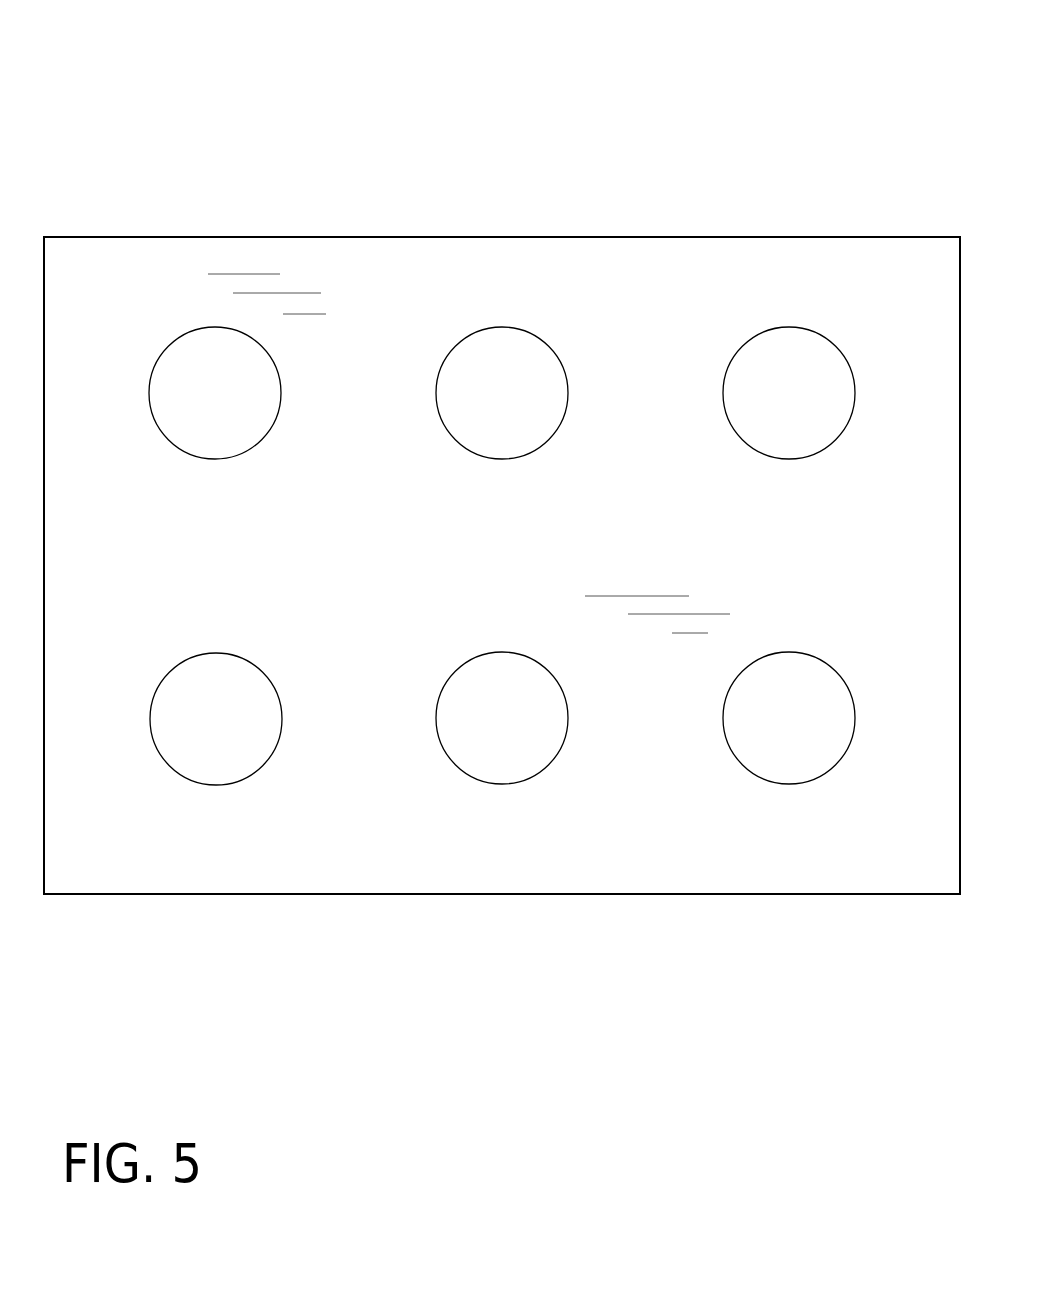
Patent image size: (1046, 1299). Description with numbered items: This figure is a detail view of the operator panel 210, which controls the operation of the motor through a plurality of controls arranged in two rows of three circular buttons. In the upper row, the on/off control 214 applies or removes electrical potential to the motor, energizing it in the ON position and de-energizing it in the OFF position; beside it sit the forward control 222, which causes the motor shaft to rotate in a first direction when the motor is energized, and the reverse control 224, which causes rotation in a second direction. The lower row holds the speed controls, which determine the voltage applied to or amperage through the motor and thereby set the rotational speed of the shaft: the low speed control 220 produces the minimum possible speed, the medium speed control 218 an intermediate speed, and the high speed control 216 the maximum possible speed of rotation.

The operator panel 210 is at (87, 177).
The on/off control 214 is at (252, 412).
The forward control 222 is at (538, 411).
The reverse control 224 is at (825, 411).
The low speed control 220 is at (252, 737).
The medium speed control 218 is at (538, 736).
The high speed control 216 is at (825, 737).